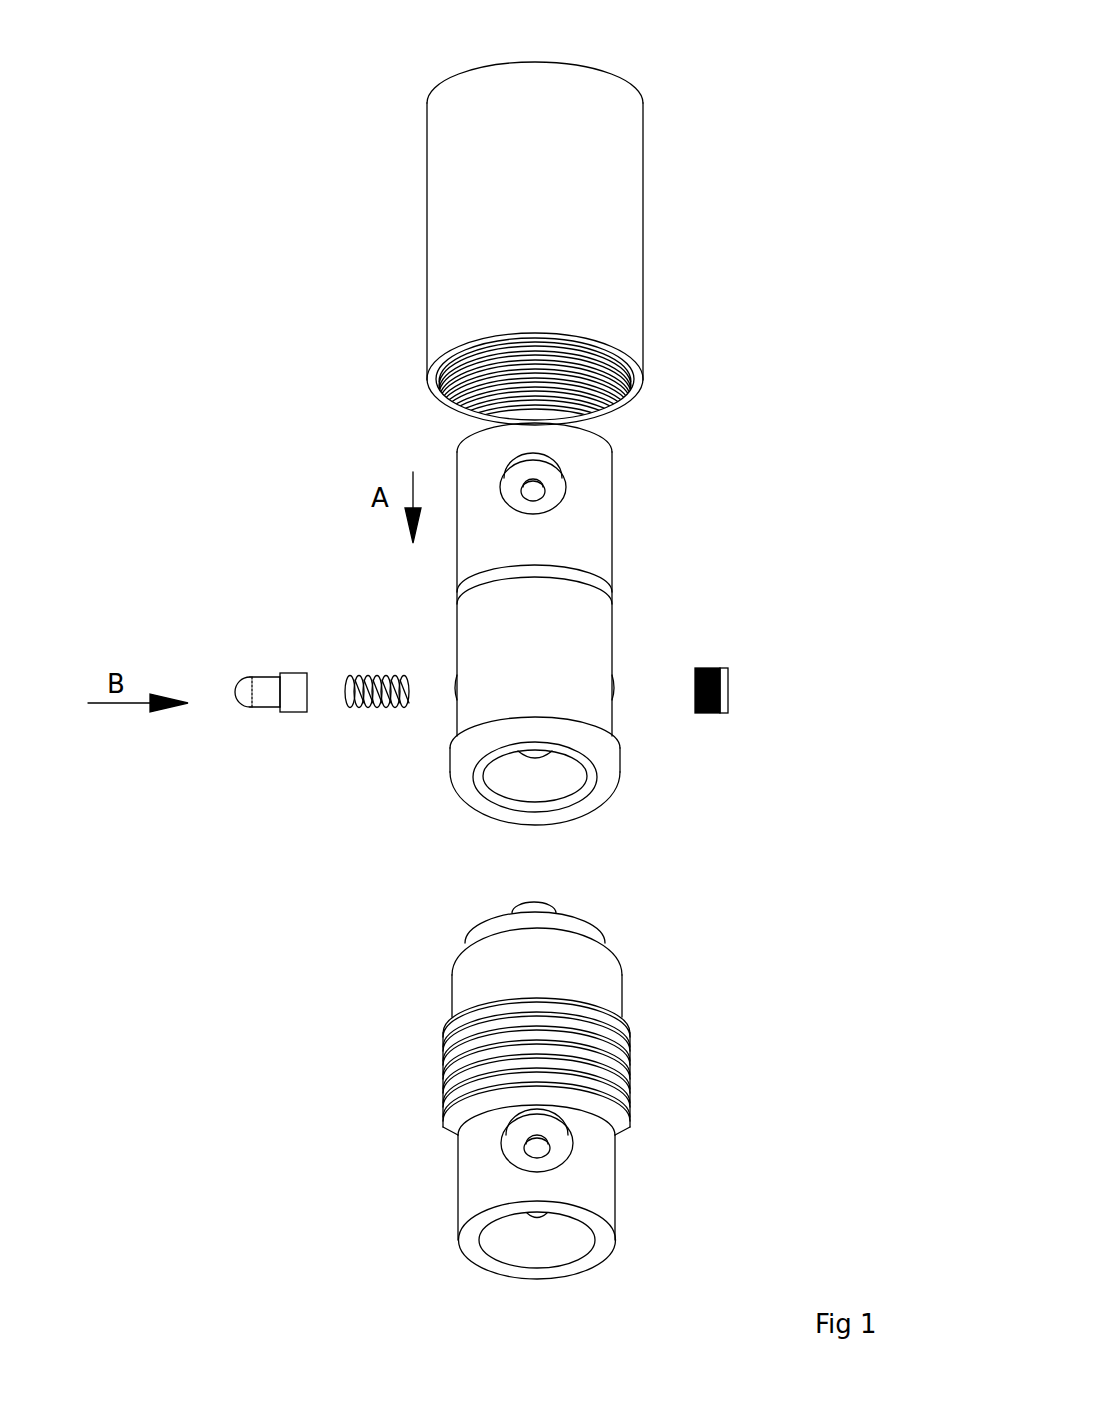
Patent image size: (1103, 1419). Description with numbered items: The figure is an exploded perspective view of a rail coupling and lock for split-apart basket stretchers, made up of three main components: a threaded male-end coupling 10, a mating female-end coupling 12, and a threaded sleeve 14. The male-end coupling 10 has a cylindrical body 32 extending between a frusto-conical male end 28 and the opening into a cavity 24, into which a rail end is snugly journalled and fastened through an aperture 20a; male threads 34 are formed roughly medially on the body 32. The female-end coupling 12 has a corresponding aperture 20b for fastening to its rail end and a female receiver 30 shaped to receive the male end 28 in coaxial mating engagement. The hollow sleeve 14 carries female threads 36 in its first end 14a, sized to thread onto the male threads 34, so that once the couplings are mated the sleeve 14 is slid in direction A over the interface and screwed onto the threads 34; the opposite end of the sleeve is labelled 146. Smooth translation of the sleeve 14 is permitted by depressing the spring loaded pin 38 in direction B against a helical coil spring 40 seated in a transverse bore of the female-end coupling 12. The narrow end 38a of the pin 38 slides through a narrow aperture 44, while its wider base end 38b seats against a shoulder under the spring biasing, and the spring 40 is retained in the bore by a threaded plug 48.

The threaded male-end coupling 10 is at (606, 1099).
The female-end coupling 12 is at (552, 624).
The threaded sleeve 14 is at (541, 227).
The cap top 146 is at (602, 55).
The first end of sleeve 14a is at (591, 373).
The aperture 20a is at (607, 471).
The aperture 20b is at (628, 1128).
The cavity 24 is at (509, 1265).
The frusto-conical male end 28 is at (567, 891).
The female receiver 30 is at (575, 771).
The cylindrical body 32 is at (577, 1084).
The male threads 34 is at (583, 1066).
The female threads 36 is at (463, 393).
The spring loaded pin 38 is at (290, 718).
The narrow end of pin 38a is at (230, 635).
The base end of pin 38b is at (332, 644).
The helical coil spring 40 is at (377, 668).
The narrow aperture 44 is at (431, 729).
The threaded plug 48 is at (752, 669).